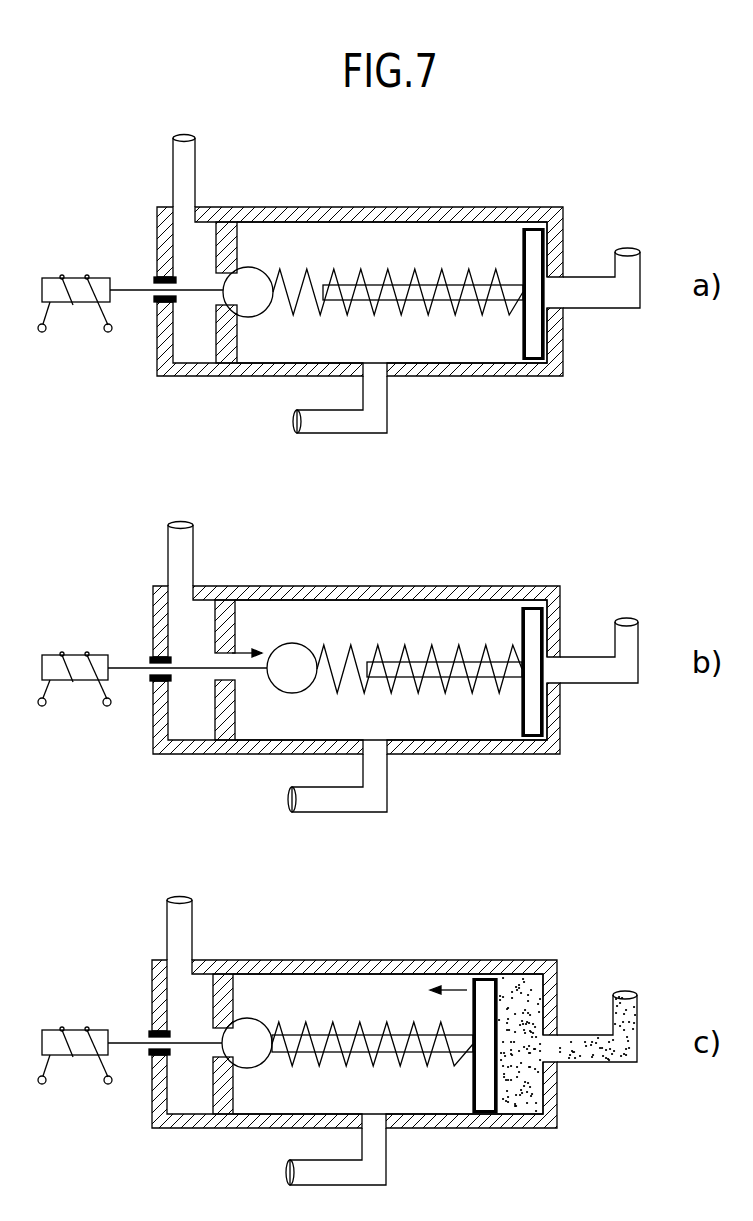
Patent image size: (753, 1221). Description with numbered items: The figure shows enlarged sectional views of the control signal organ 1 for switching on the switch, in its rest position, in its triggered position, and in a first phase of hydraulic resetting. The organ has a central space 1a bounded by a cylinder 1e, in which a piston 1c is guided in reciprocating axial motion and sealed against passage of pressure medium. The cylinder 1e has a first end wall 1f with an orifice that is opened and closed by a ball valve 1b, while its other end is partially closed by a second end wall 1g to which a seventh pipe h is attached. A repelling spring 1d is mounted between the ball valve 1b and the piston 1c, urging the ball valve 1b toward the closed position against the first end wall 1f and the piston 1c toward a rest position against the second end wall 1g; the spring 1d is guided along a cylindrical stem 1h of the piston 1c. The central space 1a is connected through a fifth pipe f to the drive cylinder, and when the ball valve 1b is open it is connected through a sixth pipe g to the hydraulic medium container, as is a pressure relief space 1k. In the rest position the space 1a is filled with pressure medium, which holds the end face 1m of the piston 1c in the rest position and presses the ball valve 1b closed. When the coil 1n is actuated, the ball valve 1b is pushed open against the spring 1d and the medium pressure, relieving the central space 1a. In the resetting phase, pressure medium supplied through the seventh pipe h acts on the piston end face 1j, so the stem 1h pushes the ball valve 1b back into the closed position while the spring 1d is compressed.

In FIG. 7a, the control signal organ 1 is at (470, 208).
In FIG. 7b, the control signal organ 1 is at (462, 588).
In FIG. 7c, the control signal organ 1 is at (457, 960).
In FIG. 7a, the central space 1a is at (410, 242).
In FIG. 7b, the central space 1a is at (410, 617).
In FIG. 7c, the central space 1a is at (403, 997).
In FIG. 7a, the ball valve 1b is at (252, 283).
In FIG. 7b, the ball valve 1b is at (290, 655).
In FIG. 7c, the ball valve 1b is at (250, 1033).
In FIG. 7a, the piston 1c is at (528, 250).
In FIG. 7b, the piston 1c is at (532, 625).
In FIG. 7c, the piston 1c is at (487, 998).
In FIG. 7a, the repelling spring 1d is at (352, 268).
In FIG. 7b, the repelling spring 1d is at (355, 643).
In FIG. 7c, the repelling spring 1d is at (347, 1027).
In FIG. 7a, the cylinder 1e is at (312, 213).
In FIG. 7b, the cylinder 1e is at (310, 590).
In FIG. 7c, the cylinder 1e is at (297, 965).
In FIG. 7a, the first end wall 1f is at (230, 347).
In FIG. 7b, the first end wall 1f is at (223, 712).
In FIG. 7c, the first end wall 1f is at (220, 1112).
In FIG. 7a, the second end wall 1g is at (552, 348).
In FIG. 7b, the second end wall 1g is at (553, 728).
In FIG. 7c, the second end wall 1g is at (550, 1107).
In FIG. 7a, the cylindrical stem 1h is at (410, 293).
In FIG. 7b, the cylindrical stem 1h is at (435, 670).
In FIG. 7c, the cylindrical stem 1h is at (390, 1047).
In FIG. 7a, the piston end face 1j is at (543, 330).
In FIG. 7b, the piston end face 1j is at (540, 705).
In FIG. 7c, the piston end face 1j is at (500, 1082).
In FIG. 7a, the pressure relief space 1k is at (190, 242).
In FIG. 7b, the pressure relief space 1k is at (188, 622).
In FIG. 7c, the pressure relief space 1k is at (185, 992).
In FIG. 7a, the end face of piston 1m is at (523, 337).
In FIG. 7b, the end face of piston 1m is at (520, 705).
In FIG. 7c, the end face of piston 1m is at (472, 1080).
In FIG. 7a, the coil 1n is at (68, 290).
In FIG. 7b, the coil 1n is at (53, 656).
In FIG. 7c, the coil 1n is at (70, 1043).
In FIG. 7a, the sixth pipe g is at (183, 173).
In FIG. 7b, the sixth pipe g is at (178, 563).
In FIG. 7c, the sixth pipe g is at (177, 928).
In FIG. 7a, the seventh pipe h is at (628, 267).
In FIG. 7b, the seventh pipe h is at (627, 647).
In FIG. 7c, the seventh pipe h is at (620, 1008).
In FIG. 7a, the fifth pipe f is at (313, 427).
In FIG. 7b, the fifth pipe f is at (310, 798).
In FIG. 7c, the fifth pipe f is at (303, 1173).